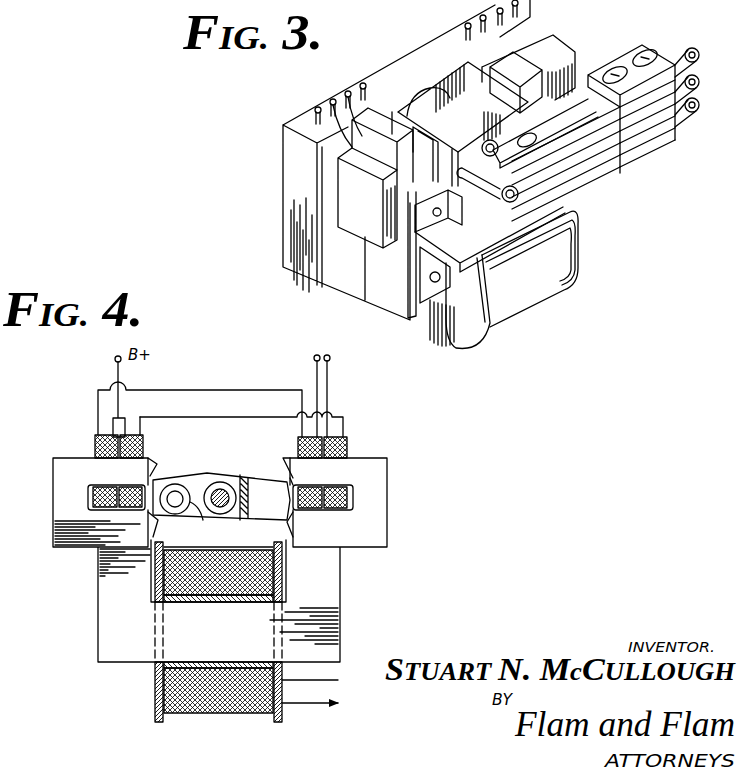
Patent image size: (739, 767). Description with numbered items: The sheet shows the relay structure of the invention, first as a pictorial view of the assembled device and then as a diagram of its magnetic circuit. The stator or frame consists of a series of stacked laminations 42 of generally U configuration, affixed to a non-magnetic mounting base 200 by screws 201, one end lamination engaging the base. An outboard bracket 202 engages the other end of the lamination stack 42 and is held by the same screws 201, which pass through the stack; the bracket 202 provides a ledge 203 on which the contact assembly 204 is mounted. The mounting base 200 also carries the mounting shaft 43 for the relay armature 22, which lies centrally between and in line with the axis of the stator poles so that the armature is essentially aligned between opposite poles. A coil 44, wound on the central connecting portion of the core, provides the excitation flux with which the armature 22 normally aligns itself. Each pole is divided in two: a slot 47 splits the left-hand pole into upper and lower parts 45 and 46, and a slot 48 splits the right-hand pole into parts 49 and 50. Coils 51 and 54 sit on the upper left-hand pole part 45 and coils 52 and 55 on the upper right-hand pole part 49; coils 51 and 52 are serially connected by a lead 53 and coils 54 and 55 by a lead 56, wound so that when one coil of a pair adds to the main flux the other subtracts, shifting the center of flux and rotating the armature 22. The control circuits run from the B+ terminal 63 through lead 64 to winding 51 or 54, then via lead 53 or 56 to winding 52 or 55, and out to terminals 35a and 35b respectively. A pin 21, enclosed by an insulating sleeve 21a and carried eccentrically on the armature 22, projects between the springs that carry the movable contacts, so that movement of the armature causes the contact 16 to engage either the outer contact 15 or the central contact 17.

In FIG. 3, the non-magnetic mounting base 200 is at (297, 240).
In FIG. 3, the stacked laminations 42 is at (367, 198).
In FIG. 4, the stacked laminations 42 is at (320, 573).
In FIG. 3, the coil 54 is at (352, 135).
In FIG. 4, the coil 54 is at (95, 445).
In FIG. 3, the coil 51 is at (393, 112).
In FIG. 4, the coil 51 is at (139, 416).
In FIG. 3, the relay armature 22 is at (463, 124).
In FIG. 4, the relay armature 22 is at (242, 474).
In FIG. 3, the mounting shaft 43 is at (490, 141).
In FIG. 4, the mounting shaft 43 is at (222, 490).
In FIG. 3, the outer contact 15 is at (532, 138).
In FIG. 3, the contact assembly 204 is at (660, 48).
In FIG. 3, the contact 16 is at (527, 160).
In FIG. 3, the central contact 17 is at (570, 191).
In FIG. 3, the pin 21 is at (513, 193).
In FIG. 4, the pin 21 is at (175, 506).
In FIG. 4, the insulating sleeve 21a is at (203, 520).
In FIG. 3, the ledge 203 is at (502, 238).
In FIG. 3, the coil 44 is at (512, 279).
In FIG. 4, the coil 44 is at (185, 695).
In FIG. 3, the outboard bracket 202 is at (404, 279).
In FIG. 3, the screws 201 is at (435, 283).
In FIG. 3, the coil 55 is at (527, 62).
In FIG. 4, the coil 55 is at (298, 444).
In FIG. 3, the coil 52 is at (552, 62).
In FIG. 4, the coil 52 is at (347, 443).
In FIG. 4, the upper pole part 45 is at (149, 462).
In FIG. 4, the lower pole part 46 is at (136, 524).
In FIG. 4, the upper pole part 49 is at (304, 475).
In FIG. 4, the lower pole part 50 is at (300, 524).
In FIG. 4, the slot 47 is at (100, 508).
In FIG. 4, the slot 48 is at (333, 508).
In FIG. 4, the B+ terminal 63 is at (115, 358).
In FIG. 4, the lead 64 is at (118, 373).
In FIG. 4, the lead 56 is at (233, 388).
In FIG. 4, the lead 53 is at (237, 416).
In FIG. 4, the terminal 35a is at (331, 360).
In FIG. 4, the terminal 35b is at (313, 358).